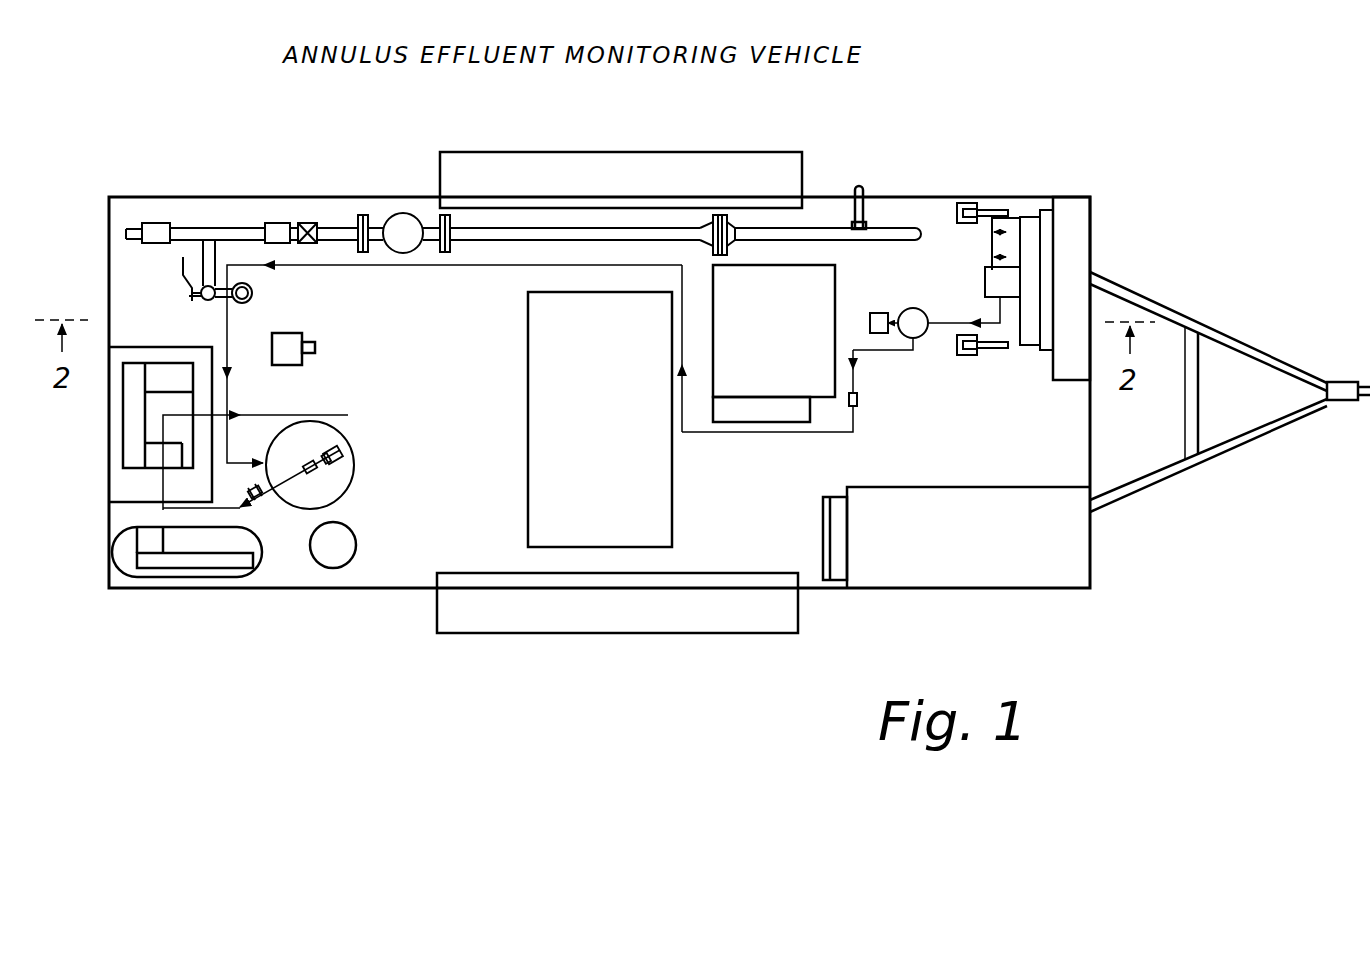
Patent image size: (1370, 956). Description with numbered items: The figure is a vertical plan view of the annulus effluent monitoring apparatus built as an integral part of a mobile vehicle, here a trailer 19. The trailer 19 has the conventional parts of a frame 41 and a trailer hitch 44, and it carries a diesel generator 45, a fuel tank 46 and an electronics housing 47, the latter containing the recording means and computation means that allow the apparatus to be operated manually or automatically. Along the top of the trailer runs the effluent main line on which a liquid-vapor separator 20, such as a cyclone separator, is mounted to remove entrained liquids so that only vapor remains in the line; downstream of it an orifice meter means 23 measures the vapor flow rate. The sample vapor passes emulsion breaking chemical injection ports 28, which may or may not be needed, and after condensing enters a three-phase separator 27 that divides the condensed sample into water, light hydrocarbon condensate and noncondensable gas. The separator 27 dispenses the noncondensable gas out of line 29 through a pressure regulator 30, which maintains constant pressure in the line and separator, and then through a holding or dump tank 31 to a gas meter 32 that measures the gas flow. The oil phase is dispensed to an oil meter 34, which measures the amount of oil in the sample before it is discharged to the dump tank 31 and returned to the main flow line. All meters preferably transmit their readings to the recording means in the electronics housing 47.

The trailer 19 is at (916, 109).
The liquid-vapor separator 20 is at (404, 213).
The orifice meter means 23 is at (716, 215).
The three-phase separator 27 is at (925, 335).
The emulsion breaking chemical injection ports 28 is at (1005, 250).
The line 29 is at (303, 475).
The pressure regulator 30 is at (857, 398).
The holding or dump tank 31 is at (355, 465).
The gas meter 32 is at (253, 489).
The oil meter 34 is at (880, 334).
The frame 41 is at (925, 196).
The trailer hitch 44 is at (1340, 382).
The diesel generator 45 is at (586, 470).
The fuel tank 46 is at (820, 377).
The electronics housing 47 is at (921, 585).